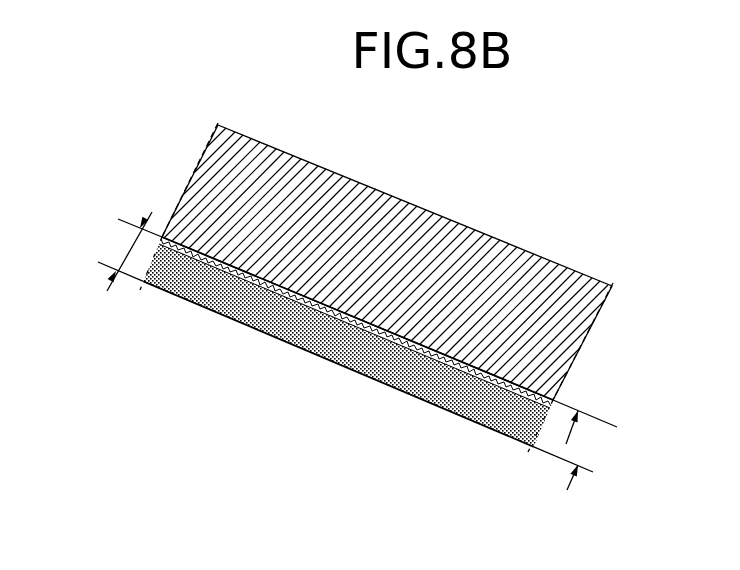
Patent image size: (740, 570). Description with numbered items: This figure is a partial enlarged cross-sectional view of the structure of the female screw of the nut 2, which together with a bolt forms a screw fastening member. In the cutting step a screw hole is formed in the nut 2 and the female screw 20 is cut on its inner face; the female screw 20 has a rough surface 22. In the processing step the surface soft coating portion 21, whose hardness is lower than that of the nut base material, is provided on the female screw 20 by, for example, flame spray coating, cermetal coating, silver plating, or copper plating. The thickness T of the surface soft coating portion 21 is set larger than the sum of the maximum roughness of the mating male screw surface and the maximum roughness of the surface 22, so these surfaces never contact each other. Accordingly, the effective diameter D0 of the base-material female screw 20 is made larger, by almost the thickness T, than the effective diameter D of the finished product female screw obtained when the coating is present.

The nut 2 is at (390, 185).
The female screw 20 is at (457, 232).
The surface soft coating portion 21 is at (292, 328).
The surface of the female screw 22 is at (373, 328).
The thickness of the surface soft coating portion T is at (125, 245).
The effective diameter of the female screw of the base material D0 is at (567, 440).
The effective diameter of the finished product female screw D is at (567, 493).